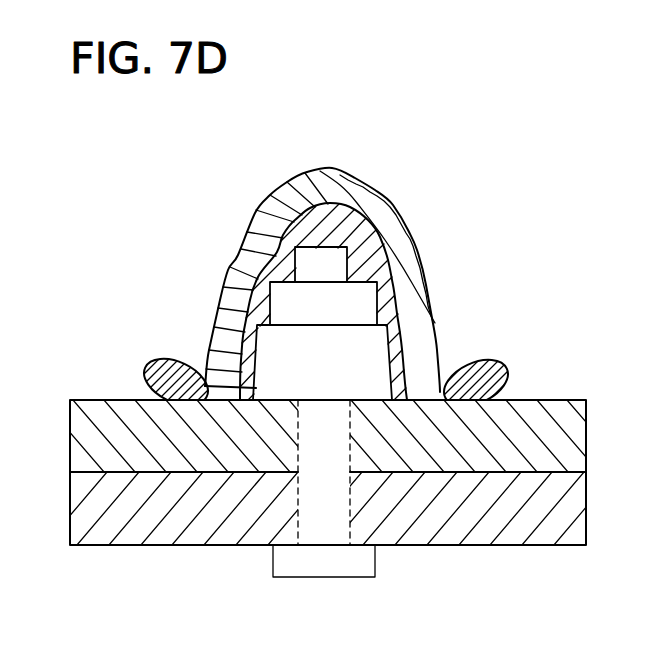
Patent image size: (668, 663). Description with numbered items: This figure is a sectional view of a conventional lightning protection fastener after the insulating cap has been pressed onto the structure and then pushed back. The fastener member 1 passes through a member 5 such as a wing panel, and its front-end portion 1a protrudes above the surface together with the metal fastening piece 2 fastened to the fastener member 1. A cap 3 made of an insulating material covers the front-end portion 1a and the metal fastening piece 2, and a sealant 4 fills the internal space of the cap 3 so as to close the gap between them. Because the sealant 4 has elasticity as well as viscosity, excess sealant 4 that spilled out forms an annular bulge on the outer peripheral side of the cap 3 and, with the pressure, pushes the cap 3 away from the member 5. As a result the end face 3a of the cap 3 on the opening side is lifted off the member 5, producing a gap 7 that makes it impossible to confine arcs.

The fastener member 1 is at (375, 456).
The front-end portion 1a is at (348, 261).
The metal fastening piece 2 is at (440, 318).
The cap 3 is at (386, 186).
The end face 3a is at (234, 384).
The sealant 4 is at (267, 250).
The member 5 is at (352, 451).
The gap 7 is at (223, 390).